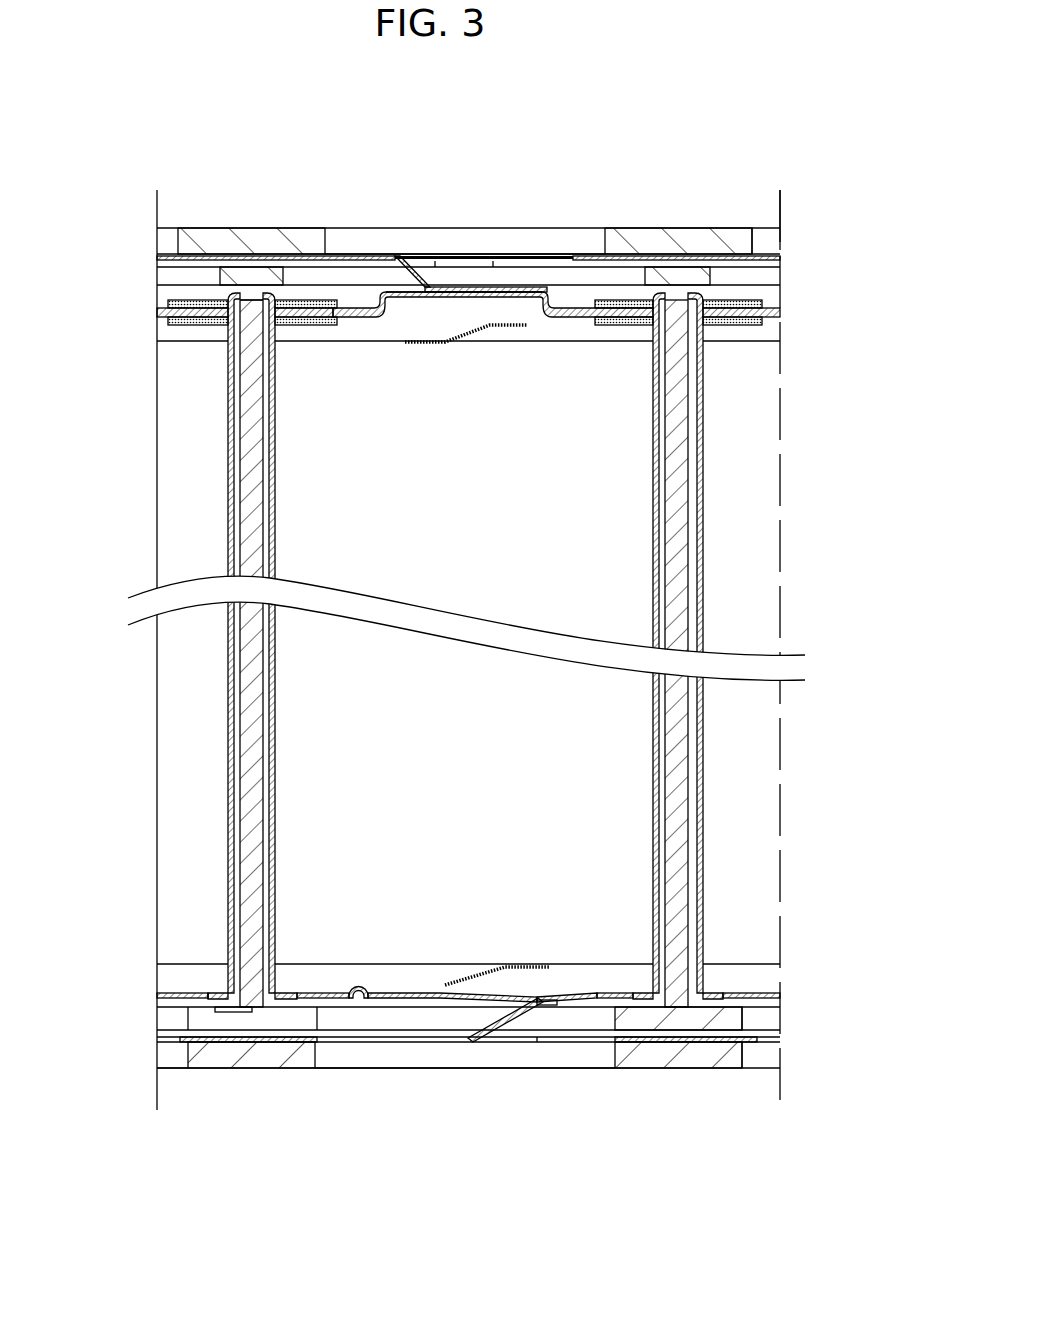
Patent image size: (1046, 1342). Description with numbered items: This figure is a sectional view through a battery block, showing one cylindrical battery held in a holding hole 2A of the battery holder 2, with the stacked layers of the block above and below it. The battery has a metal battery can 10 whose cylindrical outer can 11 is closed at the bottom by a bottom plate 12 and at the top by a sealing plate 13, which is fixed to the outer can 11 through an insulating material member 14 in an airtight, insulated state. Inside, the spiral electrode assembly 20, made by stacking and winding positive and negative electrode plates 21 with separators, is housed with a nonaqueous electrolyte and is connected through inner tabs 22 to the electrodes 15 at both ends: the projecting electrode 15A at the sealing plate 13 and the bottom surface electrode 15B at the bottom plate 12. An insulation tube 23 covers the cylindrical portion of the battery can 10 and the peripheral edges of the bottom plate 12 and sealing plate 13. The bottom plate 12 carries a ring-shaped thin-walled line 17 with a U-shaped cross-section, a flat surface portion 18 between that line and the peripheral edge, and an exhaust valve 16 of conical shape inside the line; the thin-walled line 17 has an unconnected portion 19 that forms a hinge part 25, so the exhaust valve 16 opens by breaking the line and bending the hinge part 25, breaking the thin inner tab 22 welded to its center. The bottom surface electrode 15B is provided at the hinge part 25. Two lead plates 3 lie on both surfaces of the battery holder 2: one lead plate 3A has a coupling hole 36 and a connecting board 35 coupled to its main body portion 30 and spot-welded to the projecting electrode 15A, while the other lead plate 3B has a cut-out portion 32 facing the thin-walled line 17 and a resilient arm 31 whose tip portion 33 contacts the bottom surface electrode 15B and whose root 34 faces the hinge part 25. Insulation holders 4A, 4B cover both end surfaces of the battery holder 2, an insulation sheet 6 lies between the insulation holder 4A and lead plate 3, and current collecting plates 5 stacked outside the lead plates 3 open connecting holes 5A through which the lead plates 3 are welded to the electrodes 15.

The battery holder 2 is at (379, 653).
The holding hole 2A is at (243, 361).
The lead plate 3 is at (468, 647).
The one lead plate 3A is at (422, 112).
The other lead plate 3B is at (345, 1162).
The insulation holder 4A is at (688, 272).
The insulation holder 4B is at (680, 1022).
The current collecting plate 5 is at (237, 237).
The connecting hole 5A is at (359, 223).
The insulation sheet 6 is at (713, 1043).
The battery can 10 is at (840, 465).
The outer can 11 is at (270, 446).
The bottom plate 12 is at (468, 895).
The sealing plate 13 is at (543, 305).
The insulating material member 14 is at (305, 330).
The electrode 15 is at (279, 680).
The projecting electrode 15A is at (413, 298).
The bottom surface electrode 15B is at (170, 881).
The exhaust valve 16 is at (407, 991).
The thin-walled line 17 is at (356, 986).
The flat surface portion 18 is at (302, 990).
The unconnected portion 19 is at (594, 932).
The spiral electrode assembly 20 is at (632, 781).
The positive and negative electrode plates 21 is at (422, 710).
The inner tab 22 is at (455, 346).
The insulation tube 23 is at (268, 884).
The hinge part 25 is at (580, 992).
The main body portion 30 is at (590, 263).
The resilient arm 31 is at (423, 1040).
The cut-out portion 32 is at (353, 1046).
The tip portion 33 is at (542, 1008).
The root 34 is at (572, 1043).
The connecting board 35 is at (467, 286).
The coupling hole 36 is at (511, 242).